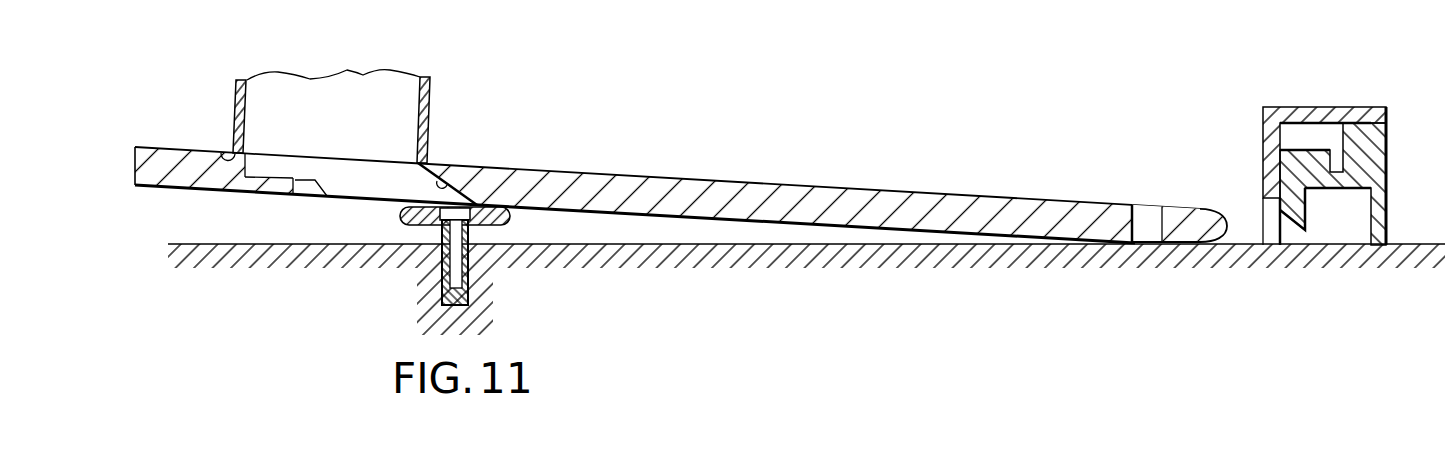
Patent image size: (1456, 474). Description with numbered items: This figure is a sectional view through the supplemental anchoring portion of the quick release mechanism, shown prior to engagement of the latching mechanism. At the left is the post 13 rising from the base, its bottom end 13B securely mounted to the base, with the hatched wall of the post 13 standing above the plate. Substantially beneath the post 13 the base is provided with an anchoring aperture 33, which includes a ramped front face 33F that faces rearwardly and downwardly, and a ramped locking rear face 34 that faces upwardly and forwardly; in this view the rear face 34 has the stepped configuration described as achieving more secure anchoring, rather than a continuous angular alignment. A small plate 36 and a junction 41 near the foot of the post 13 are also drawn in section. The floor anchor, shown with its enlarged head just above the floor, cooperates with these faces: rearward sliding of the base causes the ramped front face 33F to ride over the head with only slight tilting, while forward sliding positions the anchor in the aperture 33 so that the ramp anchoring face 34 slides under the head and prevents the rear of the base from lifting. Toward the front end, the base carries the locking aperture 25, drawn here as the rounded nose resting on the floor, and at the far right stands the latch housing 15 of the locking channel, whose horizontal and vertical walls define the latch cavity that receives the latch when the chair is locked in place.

The post 13 is at (435, 75).
The bottom end of the post 13B is at (231, 152).
The anchoring aperture 33 is at (318, 158).
The ramped front face 33F is at (477, 168).
The weld joint 41 is at (388, 170).
The spacer plate 36 is at (308, 192).
The ramped locking rear face 34 is at (325, 186).
The locking aperture 25 is at (1140, 207).
The latch housing 15 is at (1387, 148).